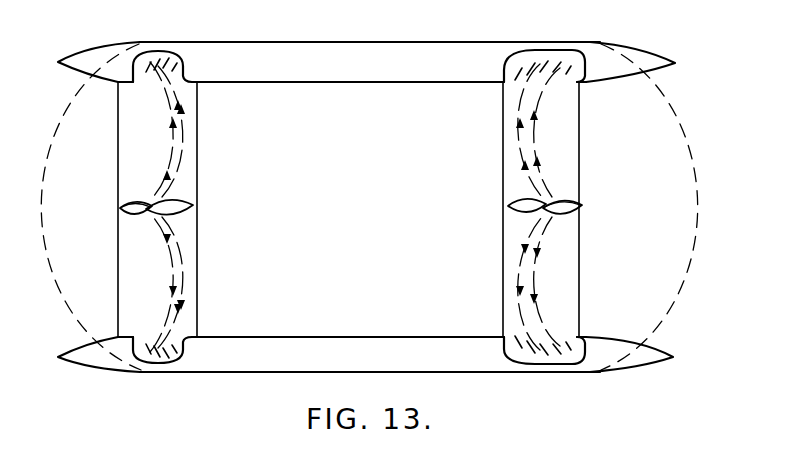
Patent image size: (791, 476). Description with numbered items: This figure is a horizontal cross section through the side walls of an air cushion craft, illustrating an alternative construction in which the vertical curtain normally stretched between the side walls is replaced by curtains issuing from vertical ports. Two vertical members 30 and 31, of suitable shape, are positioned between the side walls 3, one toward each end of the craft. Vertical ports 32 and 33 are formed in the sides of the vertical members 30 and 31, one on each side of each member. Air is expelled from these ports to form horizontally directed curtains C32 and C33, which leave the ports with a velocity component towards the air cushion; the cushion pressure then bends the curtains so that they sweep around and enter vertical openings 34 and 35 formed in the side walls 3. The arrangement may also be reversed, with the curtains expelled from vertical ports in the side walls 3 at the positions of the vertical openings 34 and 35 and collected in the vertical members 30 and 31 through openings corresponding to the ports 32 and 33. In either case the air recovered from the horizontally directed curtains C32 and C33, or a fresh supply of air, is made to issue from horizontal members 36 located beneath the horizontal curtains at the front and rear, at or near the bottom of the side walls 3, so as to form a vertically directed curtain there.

The side walls 3 is at (349, 52).
The vertical member 30 is at (173, 205).
The vertical member 31 is at (518, 212).
The vertical port 32 is at (124, 210).
The vertical port 33 is at (552, 220).
The vertical opening 34 is at (187, 86).
The vertical opening 35 is at (520, 72).
The horizontal member 36 is at (118, 152).
The horizontally directed curtain C32 is at (184, 142).
The horizontally directed curtain C33 is at (522, 259).